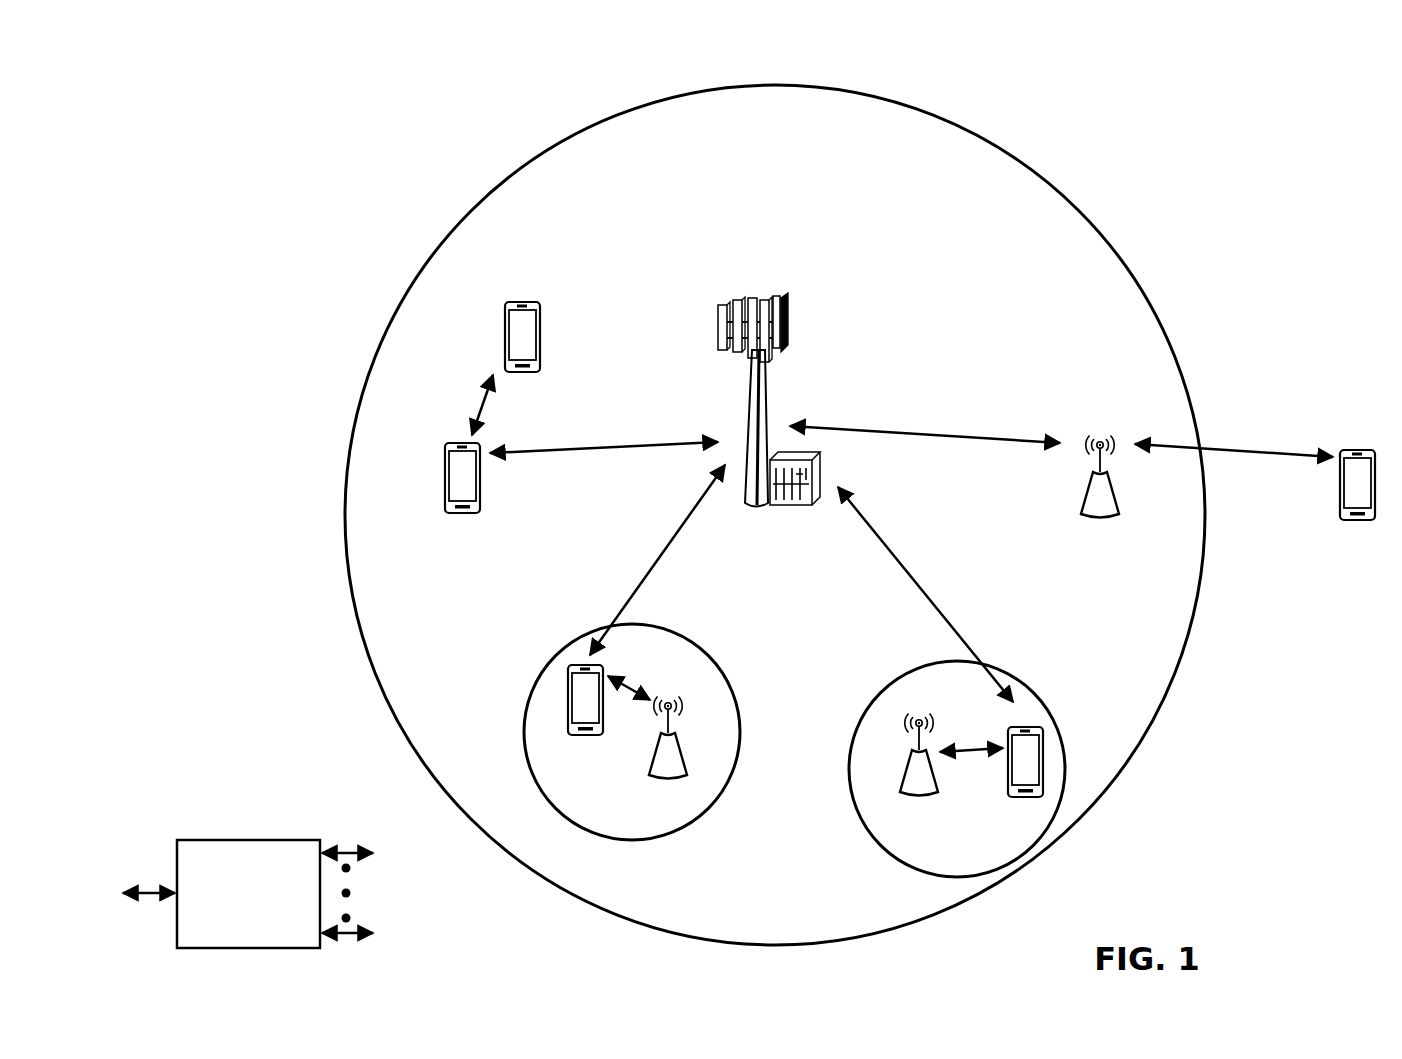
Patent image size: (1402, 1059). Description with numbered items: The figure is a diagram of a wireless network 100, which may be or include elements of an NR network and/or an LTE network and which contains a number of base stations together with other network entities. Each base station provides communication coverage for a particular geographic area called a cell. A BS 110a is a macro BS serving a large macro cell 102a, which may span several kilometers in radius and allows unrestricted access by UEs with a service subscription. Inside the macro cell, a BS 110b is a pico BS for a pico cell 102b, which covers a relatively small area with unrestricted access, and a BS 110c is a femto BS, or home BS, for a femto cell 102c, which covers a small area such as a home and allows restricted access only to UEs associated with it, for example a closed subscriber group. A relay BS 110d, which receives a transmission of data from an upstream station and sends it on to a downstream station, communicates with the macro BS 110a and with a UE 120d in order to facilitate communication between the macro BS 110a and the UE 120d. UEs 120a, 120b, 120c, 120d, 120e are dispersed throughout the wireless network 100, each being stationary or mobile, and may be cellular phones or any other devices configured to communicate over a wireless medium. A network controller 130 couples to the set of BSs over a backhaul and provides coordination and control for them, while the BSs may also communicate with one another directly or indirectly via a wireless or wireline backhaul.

The wireless network 100 is at (172, 80).
The macro cell 102a is at (1060, 192).
The pico cell 102b is at (725, 672).
The femto cell 102c is at (890, 680).
The macro base station 110a is at (764, 292).
The pico base station 110b is at (688, 770).
The femto base station 110c is at (905, 784).
The relay base station 110d is at (1102, 440).
The user equipment 120a is at (444, 470).
The user equipment 120b is at (574, 735).
The user equipment 120c is at (1010, 796).
The user equipment 120d is at (1372, 450).
The user equipment 120e is at (504, 321).
The network controller 130 is at (248, 839).